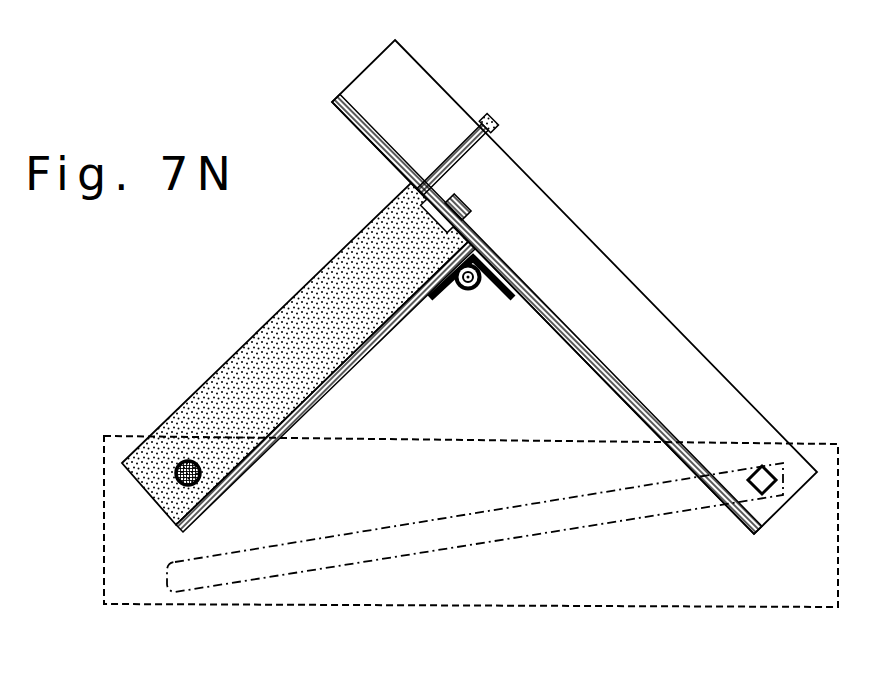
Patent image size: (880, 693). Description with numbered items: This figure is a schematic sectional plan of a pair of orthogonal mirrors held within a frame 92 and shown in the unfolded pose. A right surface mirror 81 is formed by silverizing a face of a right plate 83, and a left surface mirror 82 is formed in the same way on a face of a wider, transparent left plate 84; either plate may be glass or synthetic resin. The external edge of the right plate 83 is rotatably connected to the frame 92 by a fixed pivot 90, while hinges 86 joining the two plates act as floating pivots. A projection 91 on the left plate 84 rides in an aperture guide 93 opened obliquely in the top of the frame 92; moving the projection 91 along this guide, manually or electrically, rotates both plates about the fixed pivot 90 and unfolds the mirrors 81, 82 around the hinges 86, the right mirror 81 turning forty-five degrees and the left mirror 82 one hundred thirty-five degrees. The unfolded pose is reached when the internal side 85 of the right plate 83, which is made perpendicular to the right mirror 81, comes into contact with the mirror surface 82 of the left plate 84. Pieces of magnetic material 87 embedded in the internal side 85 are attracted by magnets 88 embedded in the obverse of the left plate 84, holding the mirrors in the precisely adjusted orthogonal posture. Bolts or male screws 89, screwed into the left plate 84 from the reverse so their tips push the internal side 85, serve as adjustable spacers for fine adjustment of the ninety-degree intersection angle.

The right surface mirror 81 is at (333, 393).
The left surface mirror 82 is at (584, 366).
The right plate 83 is at (295, 354).
The left plate 84 is at (574, 287).
The internal side 85 is at (411, 164).
The hinges 86 is at (471, 291).
The pieces of magnetic material 87 is at (428, 240).
The magnets 88 is at (463, 208).
The bolts or male screws 89 is at (466, 147).
The fixed pivot 90 is at (180, 460).
The projection 91 is at (763, 466).
The frame 92 is at (455, 437).
The aperture guide 93 is at (320, 573).